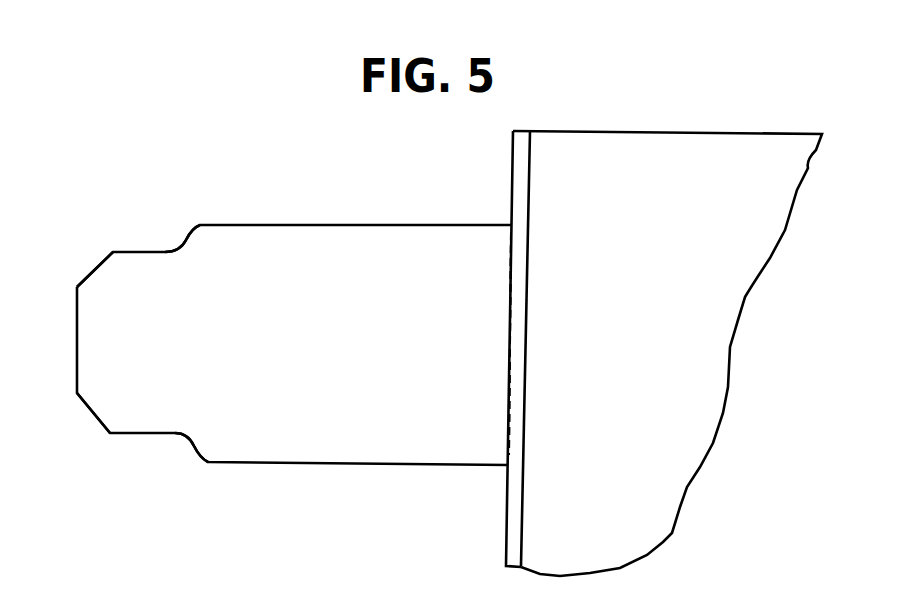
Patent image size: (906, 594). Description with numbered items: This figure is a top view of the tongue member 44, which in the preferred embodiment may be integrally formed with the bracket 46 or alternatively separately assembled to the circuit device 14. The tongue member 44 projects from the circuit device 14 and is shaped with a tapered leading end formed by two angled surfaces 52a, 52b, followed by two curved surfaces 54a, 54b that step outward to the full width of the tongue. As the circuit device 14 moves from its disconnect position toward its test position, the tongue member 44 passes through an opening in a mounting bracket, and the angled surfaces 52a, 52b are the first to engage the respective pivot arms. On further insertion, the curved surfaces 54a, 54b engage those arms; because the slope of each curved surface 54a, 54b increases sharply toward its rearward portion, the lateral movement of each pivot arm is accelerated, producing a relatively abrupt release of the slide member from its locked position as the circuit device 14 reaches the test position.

The circuit device 14 is at (802, 133).
The tongue member 44 is at (288, 225).
The bracket 46 is at (507, 520).
The angled surface 52a is at (90, 410).
The angled surface 52b is at (93, 270).
The curved surface 54a is at (148, 434).
The curved surface 54b is at (158, 252).